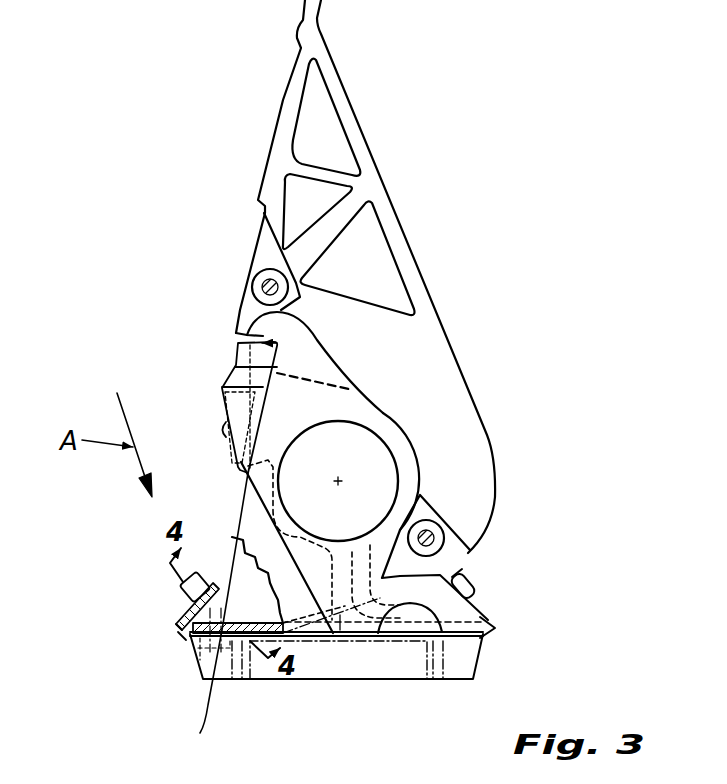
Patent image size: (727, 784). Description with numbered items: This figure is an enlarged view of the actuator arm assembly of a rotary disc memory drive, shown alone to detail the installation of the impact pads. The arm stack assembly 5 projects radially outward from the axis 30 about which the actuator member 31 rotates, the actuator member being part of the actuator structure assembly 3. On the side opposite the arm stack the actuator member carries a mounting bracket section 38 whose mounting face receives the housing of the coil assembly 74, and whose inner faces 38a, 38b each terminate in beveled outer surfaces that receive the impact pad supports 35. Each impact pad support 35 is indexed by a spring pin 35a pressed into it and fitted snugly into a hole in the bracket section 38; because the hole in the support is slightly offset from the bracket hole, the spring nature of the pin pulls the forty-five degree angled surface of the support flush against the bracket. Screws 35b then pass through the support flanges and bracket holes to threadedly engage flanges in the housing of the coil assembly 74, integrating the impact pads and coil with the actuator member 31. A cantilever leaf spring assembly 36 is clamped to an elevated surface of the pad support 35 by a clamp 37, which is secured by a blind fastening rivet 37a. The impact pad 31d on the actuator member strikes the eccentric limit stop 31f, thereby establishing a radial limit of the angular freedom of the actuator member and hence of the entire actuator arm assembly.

The arm stack assembly 5 is at (405, 222).
The actuator structure assembly 3 is at (403, 466).
The axis 30 is at (341, 479).
The actuator member 31 is at (248, 472).
The impact pad 31d is at (180, 618).
The eccentric limit stop 31f is at (497, 631).
The impact pad support 35 is at (177, 640).
The spring pin 35a is at (193, 640).
The screw 35b is at (236, 616).
The cantilever leaf spring assembly 36 is at (500, 615).
The clamp 37 is at (472, 593).
The blind fastening rivet 37a is at (472, 570).
The mounting bracket section 38 is at (452, 629).
The inner face 38a is at (199, 611).
The inner face 38b is at (400, 582).
The coil assembly 74 is at (377, 677).